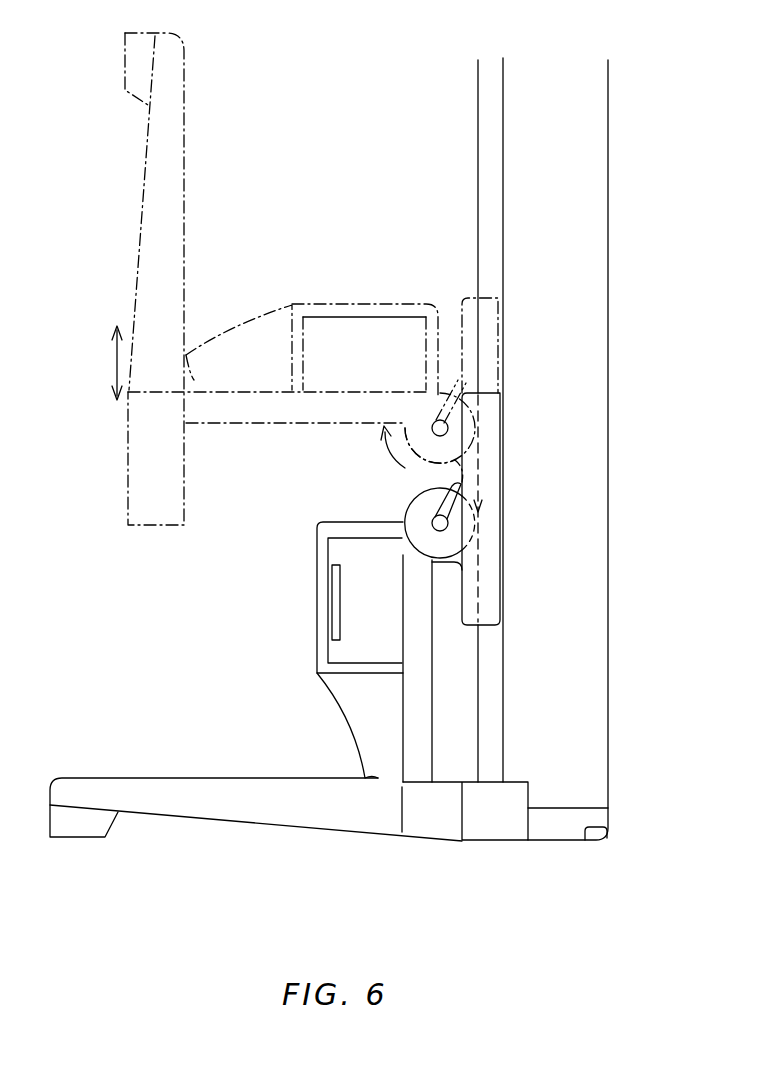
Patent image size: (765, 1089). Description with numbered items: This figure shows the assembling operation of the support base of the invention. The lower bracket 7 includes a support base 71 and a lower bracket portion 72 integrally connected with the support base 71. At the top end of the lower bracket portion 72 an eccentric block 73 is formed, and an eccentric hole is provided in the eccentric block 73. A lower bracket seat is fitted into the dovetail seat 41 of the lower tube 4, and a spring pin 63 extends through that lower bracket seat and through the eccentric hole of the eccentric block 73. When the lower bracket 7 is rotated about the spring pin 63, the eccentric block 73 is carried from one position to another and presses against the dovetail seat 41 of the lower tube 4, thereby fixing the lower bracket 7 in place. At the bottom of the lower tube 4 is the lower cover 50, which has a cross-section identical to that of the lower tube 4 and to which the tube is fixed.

The lower tube 4 is at (607, 585).
The dovetail seat 41 is at (478, 112).
The lower cover 50 is at (585, 828).
The lower bracket 7 is at (307, 744).
The support base 71 is at (205, 810).
The lower bracket portion 72 is at (318, 598).
The eccentric block 73 is at (414, 508).
The spring pin 63 is at (446, 522).